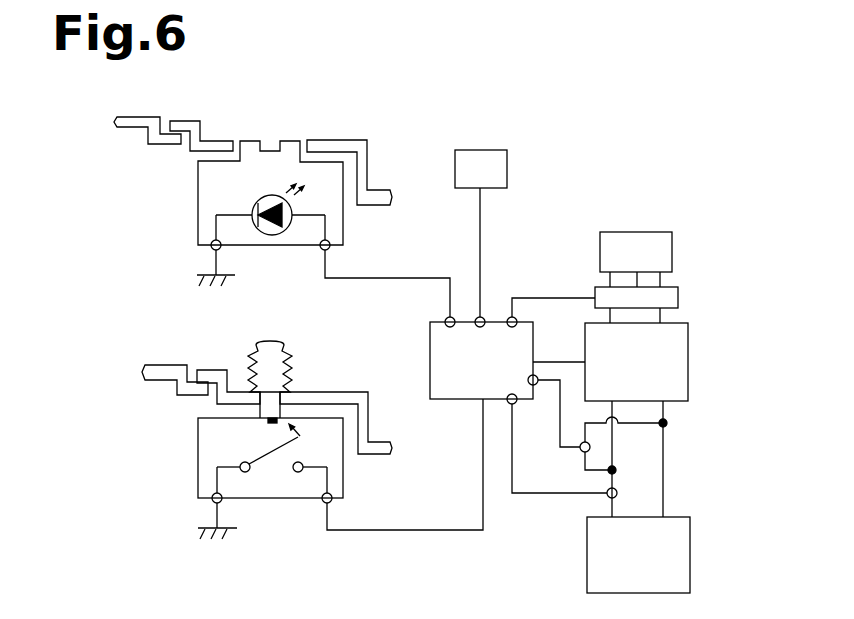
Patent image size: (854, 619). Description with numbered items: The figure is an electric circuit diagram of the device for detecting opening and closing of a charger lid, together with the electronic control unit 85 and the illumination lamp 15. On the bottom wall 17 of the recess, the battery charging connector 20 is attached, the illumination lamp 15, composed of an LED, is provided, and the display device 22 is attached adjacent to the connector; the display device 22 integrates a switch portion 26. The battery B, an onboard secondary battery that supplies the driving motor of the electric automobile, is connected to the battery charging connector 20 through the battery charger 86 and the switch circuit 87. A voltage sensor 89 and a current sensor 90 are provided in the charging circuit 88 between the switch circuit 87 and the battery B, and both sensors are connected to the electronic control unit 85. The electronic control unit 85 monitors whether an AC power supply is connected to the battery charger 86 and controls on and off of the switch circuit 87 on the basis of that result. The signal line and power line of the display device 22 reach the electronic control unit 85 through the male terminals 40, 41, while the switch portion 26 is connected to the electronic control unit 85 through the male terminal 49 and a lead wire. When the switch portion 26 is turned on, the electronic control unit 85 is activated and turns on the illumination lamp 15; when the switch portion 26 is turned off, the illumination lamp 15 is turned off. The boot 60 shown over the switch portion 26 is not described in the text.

The illumination lamp 15 is at (258, 193).
The bottom wall 17 is at (338, 140).
The battery charging connector 20 is at (674, 250).
The display device 22 is at (508, 170).
The switch portion 26 is at (360, 479).
The male terminal 40 is at (484, 318).
The male terminal 41 is at (553, 307).
The male terminal 49 is at (212, 503).
The boot 60 is at (307, 342).
The electronic control unit 85 is at (430, 362).
The battery charger 86 is at (680, 297).
The switch circuit 87 is at (690, 362).
The charging circuit 88 is at (665, 470).
The voltage sensor 89 is at (581, 450).
The current sensor 90 is at (607, 496).
The battery B is at (692, 555).